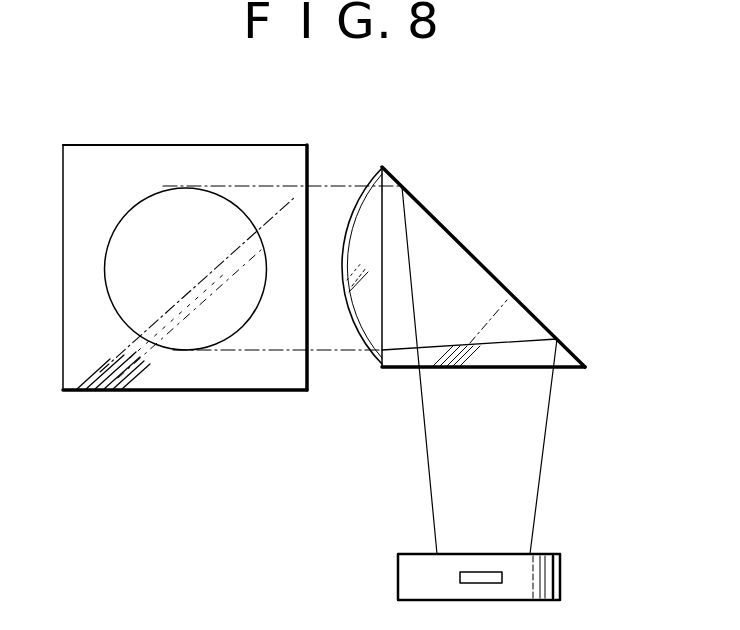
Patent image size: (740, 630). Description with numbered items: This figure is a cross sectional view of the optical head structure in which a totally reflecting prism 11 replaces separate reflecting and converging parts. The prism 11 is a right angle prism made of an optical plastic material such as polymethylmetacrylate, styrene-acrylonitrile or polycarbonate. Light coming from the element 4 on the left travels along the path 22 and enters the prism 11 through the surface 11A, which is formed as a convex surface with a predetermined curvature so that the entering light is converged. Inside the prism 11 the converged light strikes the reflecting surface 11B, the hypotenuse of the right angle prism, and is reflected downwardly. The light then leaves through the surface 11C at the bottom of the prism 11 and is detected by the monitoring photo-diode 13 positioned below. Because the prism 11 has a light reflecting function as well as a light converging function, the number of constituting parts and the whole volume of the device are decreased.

The optical recording medium 4 is at (77, 210).
The totally reflecting prism 11 is at (463, 277).
The convex surface 11A is at (351, 216).
The reflecting surface 11B is at (480, 262).
The surface through which the light is passed out 11C is at (485, 369).
The monitoring photo-diode 13 is at (560, 577).
The light beam optical axis 22 is at (340, 354).